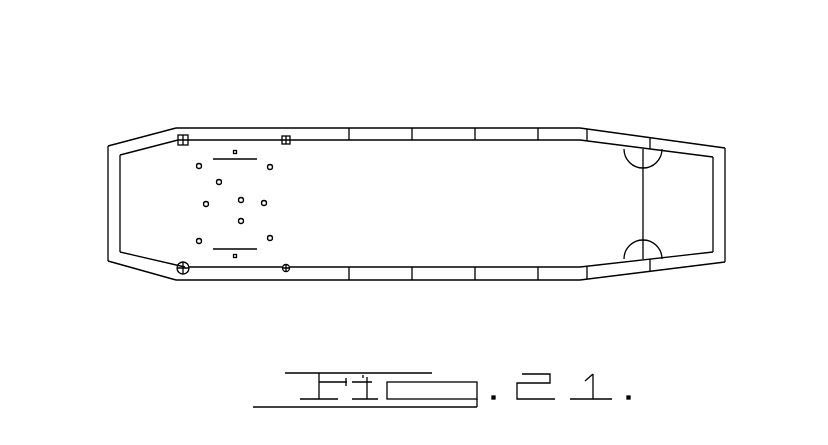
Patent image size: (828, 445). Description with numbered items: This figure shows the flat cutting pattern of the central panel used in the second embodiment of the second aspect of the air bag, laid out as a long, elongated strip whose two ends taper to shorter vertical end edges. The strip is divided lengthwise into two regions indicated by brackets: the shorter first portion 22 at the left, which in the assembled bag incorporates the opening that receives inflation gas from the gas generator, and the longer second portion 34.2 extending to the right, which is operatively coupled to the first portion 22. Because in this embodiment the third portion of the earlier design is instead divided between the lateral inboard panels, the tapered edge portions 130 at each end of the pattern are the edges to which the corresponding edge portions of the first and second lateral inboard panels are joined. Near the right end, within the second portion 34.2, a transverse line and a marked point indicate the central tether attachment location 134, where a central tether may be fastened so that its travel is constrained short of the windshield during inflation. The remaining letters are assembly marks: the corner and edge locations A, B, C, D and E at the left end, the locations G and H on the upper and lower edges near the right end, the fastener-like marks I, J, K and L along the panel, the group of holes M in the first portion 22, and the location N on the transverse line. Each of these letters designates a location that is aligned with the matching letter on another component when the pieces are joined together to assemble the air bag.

The first portion 22 is at (108, 72).
The second portion 34.2 is at (723, 72).
The edge portions 130 is at (120, 178).
The central tether attachment location 134 is at (660, 232).
The alignment location A is at (100, 265).
The alignment location B is at (738, 272).
The alignment location C is at (99, 141).
The alignment location D is at (732, 143).
The alignment location E is at (93, 211).
The alignment location G is at (647, 121).
The alignment location H is at (644, 290).
The alignment location I is at (287, 111).
The alignment location J is at (289, 291).
The alignment location K is at (183, 111).
The alignment location L is at (187, 291).
The alignment location M is at (242, 209).
The alignment location N is at (647, 198).